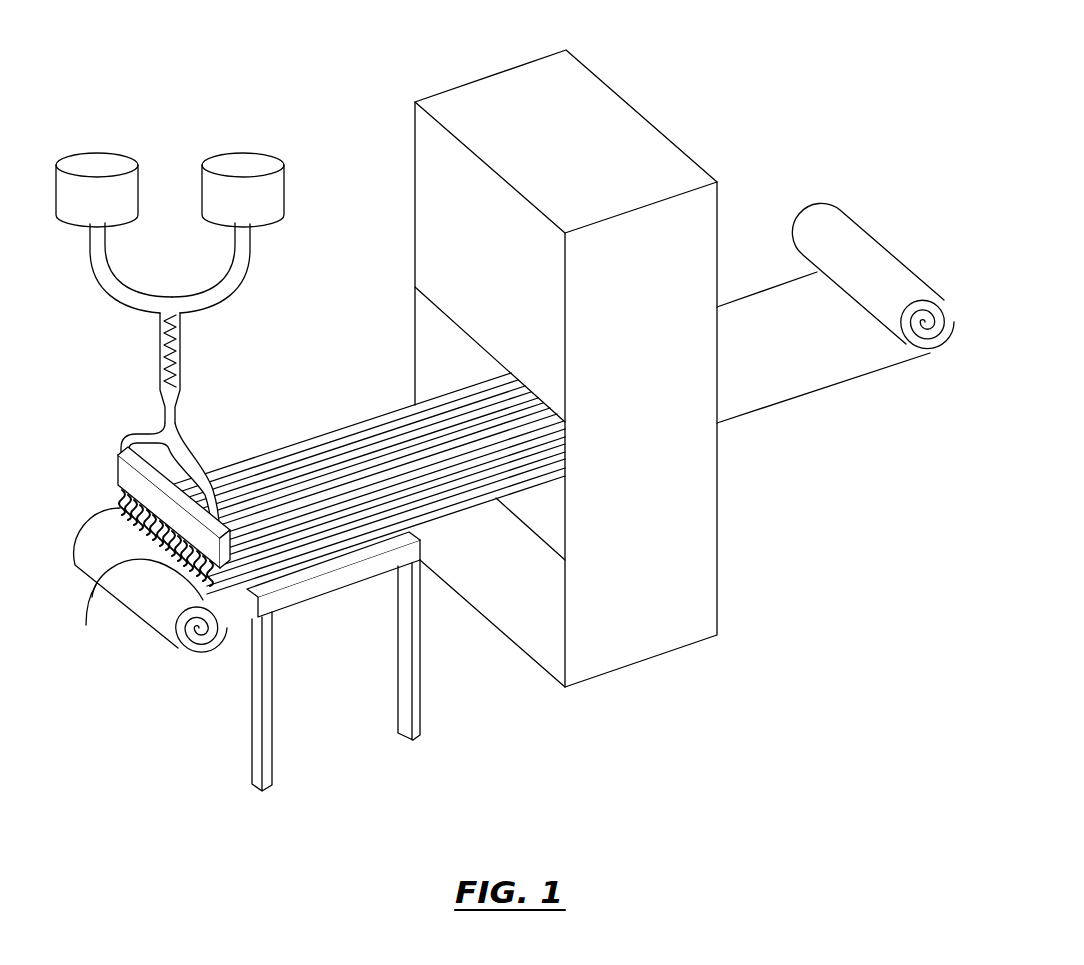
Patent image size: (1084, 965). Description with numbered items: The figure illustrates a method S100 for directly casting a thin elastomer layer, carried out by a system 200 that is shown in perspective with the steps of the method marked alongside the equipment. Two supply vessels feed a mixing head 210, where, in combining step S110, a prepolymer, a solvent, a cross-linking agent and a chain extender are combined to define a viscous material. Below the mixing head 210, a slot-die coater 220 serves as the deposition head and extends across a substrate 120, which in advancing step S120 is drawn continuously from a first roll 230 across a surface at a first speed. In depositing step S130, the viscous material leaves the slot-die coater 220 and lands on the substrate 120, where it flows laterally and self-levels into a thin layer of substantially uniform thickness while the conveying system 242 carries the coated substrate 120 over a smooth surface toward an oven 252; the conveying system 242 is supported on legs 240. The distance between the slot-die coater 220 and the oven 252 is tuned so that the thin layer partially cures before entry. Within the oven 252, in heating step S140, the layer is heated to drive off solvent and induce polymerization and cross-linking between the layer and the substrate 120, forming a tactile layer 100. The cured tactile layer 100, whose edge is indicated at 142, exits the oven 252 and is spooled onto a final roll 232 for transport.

The method S100 is at (818, 37).
The system 200 is at (326, 101).
The combining step S110 is at (140, 357).
The mixing head 210 is at (180, 368).
The slot-die coater 220 is at (118, 452).
The advancing step S120 is at (307, 490).
The depositing step S130 is at (90, 501).
The substrate 120 is at (148, 607).
The film edge 142 is at (81, 620).
The first roll 230 is at (196, 645).
The stand legs 240 is at (325, 568).
The conveying system 242 is at (283, 572).
The oven 252 is at (637, 642).
The heating step S140 is at (659, 466).
The tactile layer 100 is at (793, 370).
The final roll 232 is at (922, 327).